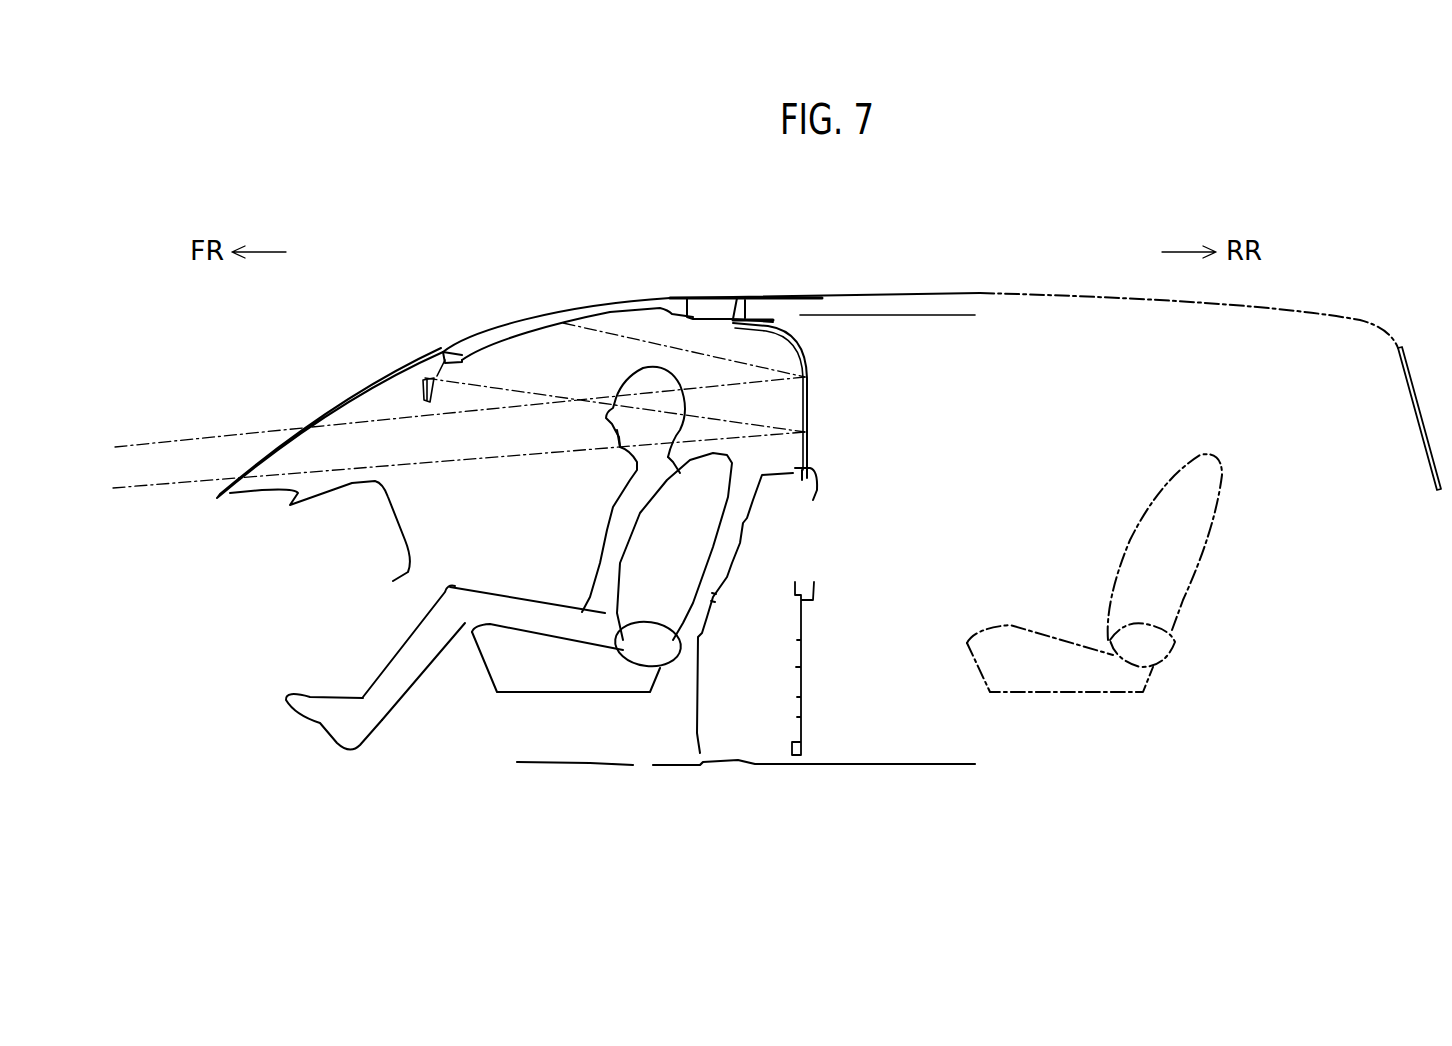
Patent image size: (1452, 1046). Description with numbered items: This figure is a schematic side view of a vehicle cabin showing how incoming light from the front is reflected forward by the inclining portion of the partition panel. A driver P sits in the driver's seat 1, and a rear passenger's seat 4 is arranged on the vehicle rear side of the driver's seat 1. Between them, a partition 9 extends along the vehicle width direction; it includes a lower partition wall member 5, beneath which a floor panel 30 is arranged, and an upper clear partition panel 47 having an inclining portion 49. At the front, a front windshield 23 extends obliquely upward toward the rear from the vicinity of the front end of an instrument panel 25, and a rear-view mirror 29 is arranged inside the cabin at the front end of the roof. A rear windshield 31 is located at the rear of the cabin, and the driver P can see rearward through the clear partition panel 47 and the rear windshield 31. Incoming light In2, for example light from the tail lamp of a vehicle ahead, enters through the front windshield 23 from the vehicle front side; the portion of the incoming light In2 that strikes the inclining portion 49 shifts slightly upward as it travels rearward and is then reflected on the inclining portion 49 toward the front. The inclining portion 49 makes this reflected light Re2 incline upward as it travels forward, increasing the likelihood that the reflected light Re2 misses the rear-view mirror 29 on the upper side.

The driver's seat 1 is at (537, 670).
The rear passenger's seat 4 is at (1108, 673).
The partition wall member 5 is at (806, 688).
The partition 9 is at (688, 714).
The front windshield 23 is at (332, 415).
The instrument panel 25 is at (407, 527).
The rear-view mirror 29 is at (420, 403).
The floor panel 30 is at (945, 762).
The rear windshield 31 is at (1422, 418).
The partition panel 47 is at (820, 361).
The inclining portion 49 is at (803, 403).
The driver P is at (610, 544).
The incoming light In2 is at (503, 456).
The reflected light Re2 is at (628, 340).